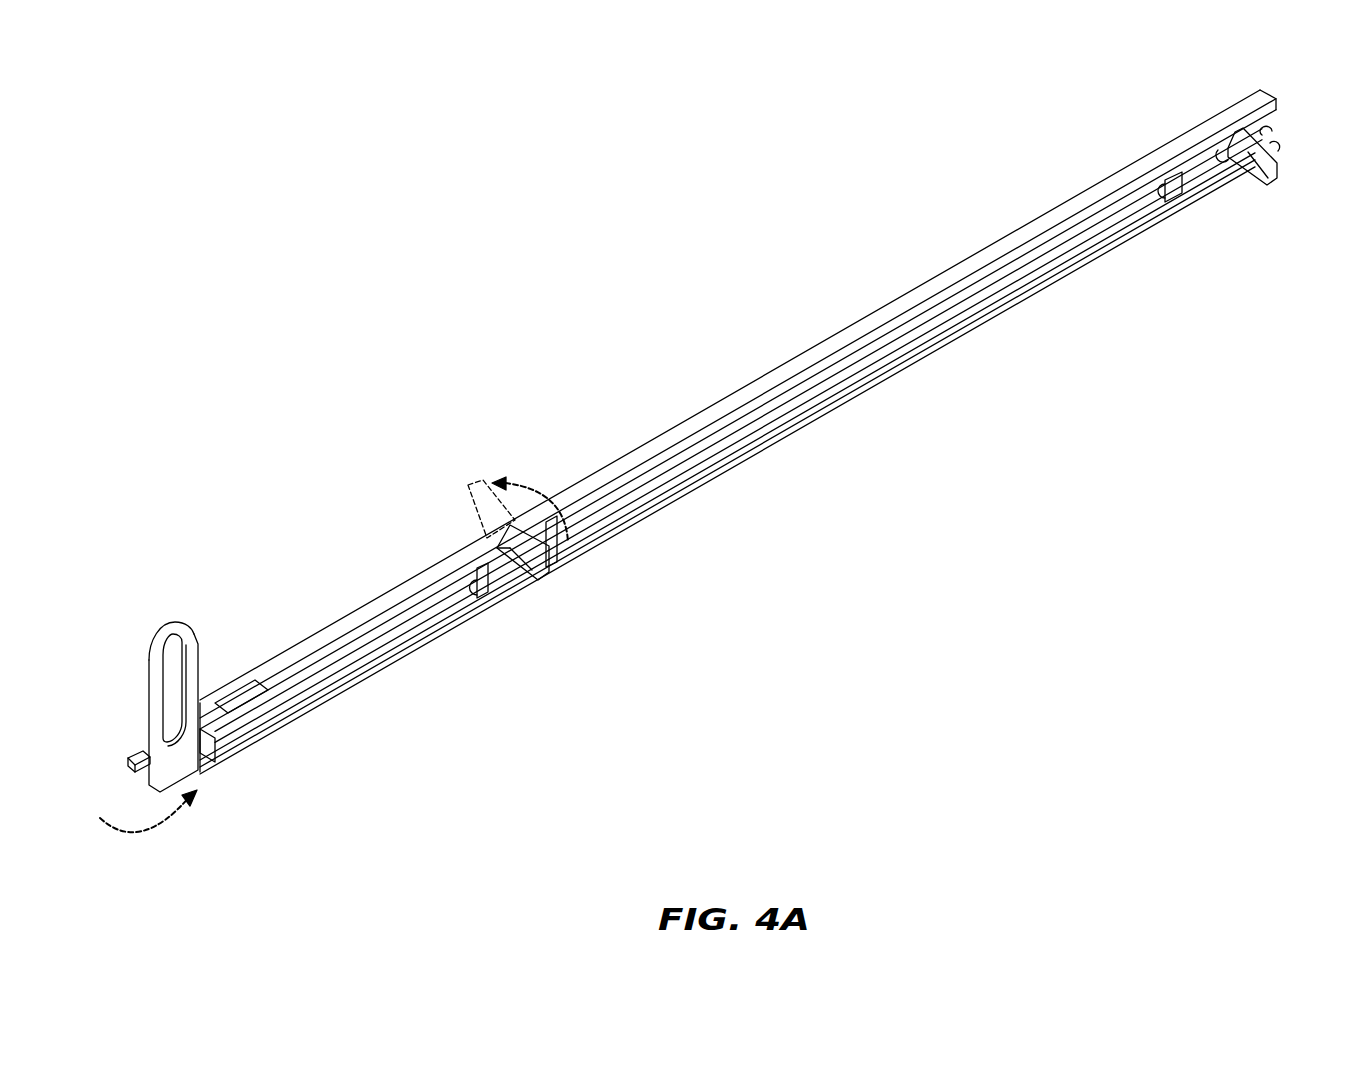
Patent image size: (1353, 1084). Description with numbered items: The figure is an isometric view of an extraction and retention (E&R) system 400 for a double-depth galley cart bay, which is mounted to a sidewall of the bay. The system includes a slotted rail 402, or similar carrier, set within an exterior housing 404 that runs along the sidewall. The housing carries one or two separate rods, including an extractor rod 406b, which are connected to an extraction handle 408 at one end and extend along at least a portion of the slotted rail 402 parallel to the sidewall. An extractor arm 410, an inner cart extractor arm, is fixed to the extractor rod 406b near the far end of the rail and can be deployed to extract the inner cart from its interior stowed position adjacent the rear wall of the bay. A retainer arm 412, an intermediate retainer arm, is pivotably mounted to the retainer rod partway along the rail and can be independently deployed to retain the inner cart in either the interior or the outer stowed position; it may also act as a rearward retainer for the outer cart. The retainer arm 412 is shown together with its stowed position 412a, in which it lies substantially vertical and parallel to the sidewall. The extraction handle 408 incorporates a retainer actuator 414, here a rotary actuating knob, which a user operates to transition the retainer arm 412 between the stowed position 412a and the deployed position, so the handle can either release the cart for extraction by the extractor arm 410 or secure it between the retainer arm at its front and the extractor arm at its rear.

The extraction and retention (E&R) system 400 is at (148, 146).
The slotted rail 402 is at (978, 276).
The exterior housing 404 is at (727, 413).
The extractor rod 406b is at (822, 398).
The extraction handle 408 is at (190, 687).
The extractor arm 410 is at (1270, 182).
The retainer arm 412 is at (532, 558).
The stowed position of the retainer arm 412a is at (485, 513).
The retainer actuator 414 is at (135, 760).